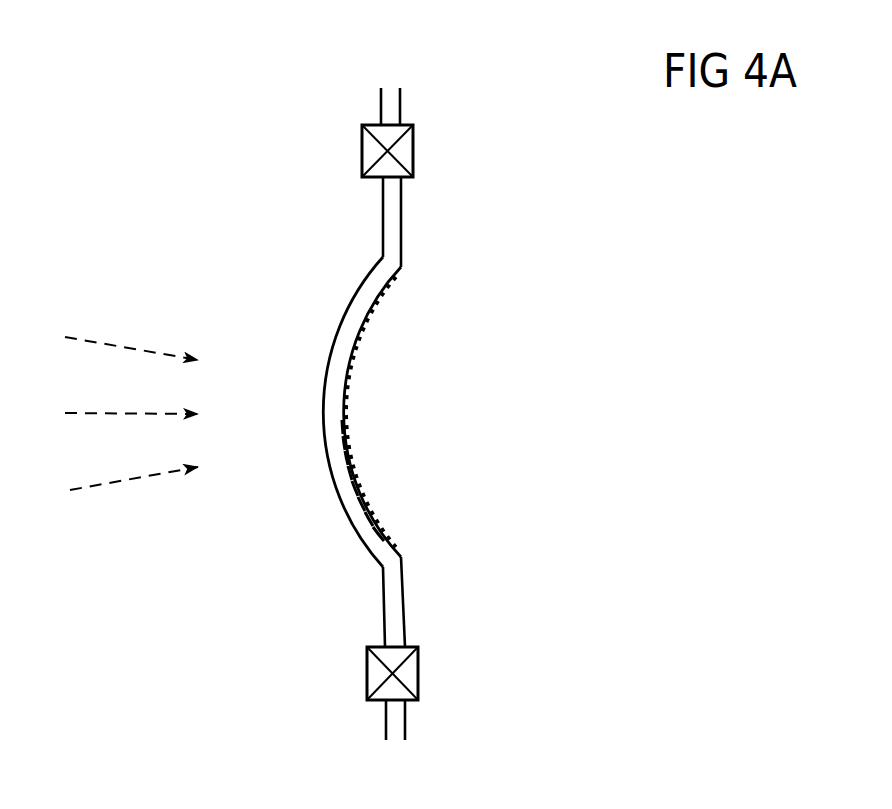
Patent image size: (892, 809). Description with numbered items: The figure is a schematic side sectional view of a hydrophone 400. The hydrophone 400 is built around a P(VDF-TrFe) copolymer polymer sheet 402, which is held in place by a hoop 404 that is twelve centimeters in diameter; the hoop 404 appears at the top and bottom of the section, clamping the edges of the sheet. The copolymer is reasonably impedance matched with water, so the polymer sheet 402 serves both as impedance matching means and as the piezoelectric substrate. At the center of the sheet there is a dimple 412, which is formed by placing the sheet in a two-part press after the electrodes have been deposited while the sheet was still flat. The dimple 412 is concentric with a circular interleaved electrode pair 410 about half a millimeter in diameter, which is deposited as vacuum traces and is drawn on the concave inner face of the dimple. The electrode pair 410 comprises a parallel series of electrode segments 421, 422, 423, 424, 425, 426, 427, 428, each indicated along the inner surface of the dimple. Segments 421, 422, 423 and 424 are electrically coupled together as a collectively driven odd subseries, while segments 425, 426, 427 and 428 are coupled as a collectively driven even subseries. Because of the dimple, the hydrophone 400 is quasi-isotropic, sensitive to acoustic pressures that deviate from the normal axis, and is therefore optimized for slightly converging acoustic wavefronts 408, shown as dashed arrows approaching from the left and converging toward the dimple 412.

The hydrophone 400 is at (486, 178).
The polymer sheet 402 is at (387, 202).
The hoop 404 is at (362, 132).
The acoustic wavefronts 408 is at (157, 477).
The electrode pair 410 is at (366, 353).
The dimple 412 is at (363, 288).
The electrode segment 421 is at (348, 425).
The electrode segment 422 is at (350, 442).
The electrode segment 423 is at (352, 457).
The electrode segment 424 is at (355, 472).
The electrode segment 425 is at (360, 488).
The electrode segment 426 is at (367, 503).
The electrode segment 427 is at (375, 518).
The electrode segment 428 is at (385, 533).